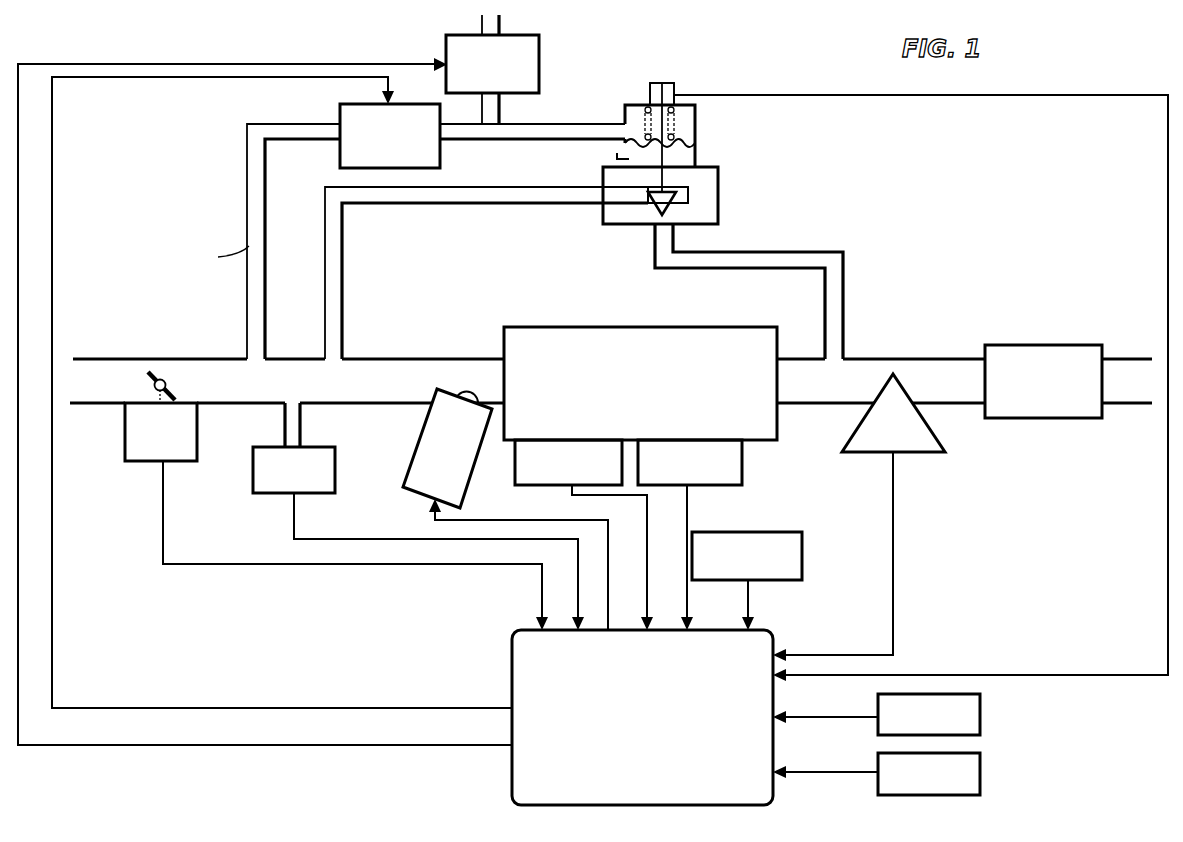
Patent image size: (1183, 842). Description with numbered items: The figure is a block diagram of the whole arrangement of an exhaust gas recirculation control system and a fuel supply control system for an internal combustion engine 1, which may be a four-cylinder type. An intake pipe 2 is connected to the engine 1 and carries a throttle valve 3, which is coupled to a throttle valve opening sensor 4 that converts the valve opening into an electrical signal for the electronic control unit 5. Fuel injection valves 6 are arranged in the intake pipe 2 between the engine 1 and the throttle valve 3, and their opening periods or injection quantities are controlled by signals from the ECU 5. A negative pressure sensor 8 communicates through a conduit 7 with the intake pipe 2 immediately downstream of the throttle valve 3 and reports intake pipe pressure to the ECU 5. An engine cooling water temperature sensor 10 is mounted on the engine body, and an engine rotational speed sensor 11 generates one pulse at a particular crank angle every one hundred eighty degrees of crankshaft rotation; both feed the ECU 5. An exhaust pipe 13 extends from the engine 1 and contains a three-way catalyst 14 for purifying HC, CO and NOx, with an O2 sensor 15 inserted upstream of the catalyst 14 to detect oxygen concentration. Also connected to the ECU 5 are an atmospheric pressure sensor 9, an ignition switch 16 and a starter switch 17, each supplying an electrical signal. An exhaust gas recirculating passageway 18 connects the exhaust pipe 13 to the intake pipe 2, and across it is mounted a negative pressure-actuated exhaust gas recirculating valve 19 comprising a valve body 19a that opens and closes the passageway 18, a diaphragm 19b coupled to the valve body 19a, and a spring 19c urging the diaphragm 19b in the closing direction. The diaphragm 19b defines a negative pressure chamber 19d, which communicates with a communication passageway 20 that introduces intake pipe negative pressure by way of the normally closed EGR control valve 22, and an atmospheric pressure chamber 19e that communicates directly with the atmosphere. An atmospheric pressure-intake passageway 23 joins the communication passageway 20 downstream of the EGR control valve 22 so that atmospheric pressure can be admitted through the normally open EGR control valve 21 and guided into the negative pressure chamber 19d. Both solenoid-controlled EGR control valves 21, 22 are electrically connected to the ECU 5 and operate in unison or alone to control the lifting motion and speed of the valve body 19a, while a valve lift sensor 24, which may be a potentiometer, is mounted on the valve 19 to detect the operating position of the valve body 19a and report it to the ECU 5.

The internal combustion engine 1 is at (616, 326).
The intake pipe 2 is at (278, 392).
The throttle valve 3 is at (147, 380).
The throttle valve opening sensor 4 is at (198, 425).
The electronic control unit 5 is at (760, 639).
The fuel injection valves 6 is at (430, 418).
The conduit 7 is at (302, 427).
The negative pressure sensor 8 is at (336, 472).
The atmospheric pressure sensor 9 is at (803, 557).
The engine cooling water temperature sensor 10 is at (520, 462).
The engine rotational speed sensor 11 is at (743, 474).
The exhaust pipe 13 is at (928, 366).
The three-way catalyst 14 is at (1060, 346).
The O2 sensor 15 is at (946, 450).
The ignition switch 16 is at (981, 716).
The starter switch 17 is at (981, 772).
The exhaust gas recirculating passageway 18 is at (508, 189).
The exhaust gas recirculating valve 19 is at (664, 148).
The valve body 19a is at (690, 199).
The diaphragm 19b is at (697, 141).
The spring 19c is at (698, 97).
The negative pressure chamber 19d is at (690, 120).
The atmospheric pressure chamber 19e is at (640, 153).
The communication passageway 20 is at (267, 172).
The EGR control valve 21 is at (528, 36).
The EGR control valve 22 is at (441, 163).
The atmospheric pressure-intake passageway 23 is at (506, 115).
The valve lift sensor 24 is at (667, 81).